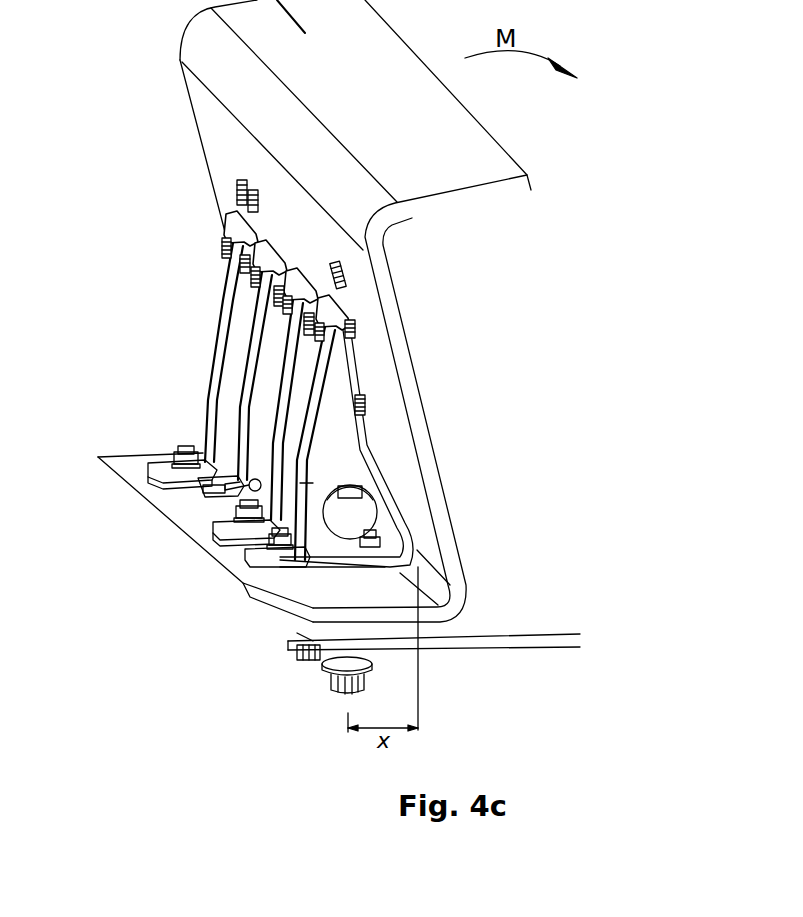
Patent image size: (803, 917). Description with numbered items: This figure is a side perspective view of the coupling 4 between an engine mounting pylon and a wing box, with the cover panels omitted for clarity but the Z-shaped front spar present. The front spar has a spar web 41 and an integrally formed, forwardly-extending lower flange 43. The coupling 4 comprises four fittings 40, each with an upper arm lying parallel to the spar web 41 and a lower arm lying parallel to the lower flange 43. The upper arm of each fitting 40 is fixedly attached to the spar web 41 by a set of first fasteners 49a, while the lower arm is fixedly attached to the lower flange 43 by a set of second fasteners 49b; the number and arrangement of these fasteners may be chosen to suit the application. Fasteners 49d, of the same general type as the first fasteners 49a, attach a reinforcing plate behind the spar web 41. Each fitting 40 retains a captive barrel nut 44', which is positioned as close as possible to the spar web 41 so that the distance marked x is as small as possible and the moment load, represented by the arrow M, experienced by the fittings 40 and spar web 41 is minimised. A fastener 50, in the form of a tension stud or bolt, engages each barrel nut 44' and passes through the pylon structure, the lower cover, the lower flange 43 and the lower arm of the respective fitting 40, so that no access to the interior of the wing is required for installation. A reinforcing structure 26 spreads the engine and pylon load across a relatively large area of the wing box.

The coupling 4 is at (645, 366).
The reinforcing structure 26 is at (502, 645).
The fitting 40 is at (291, 440).
The spar web 41 is at (415, 398).
The lower flange 43 is at (300, 583).
The barrel nut 44' is at (423, 516).
The first fastener 49a is at (226, 243).
The second fastener 49b is at (177, 452).
The fastener 49d is at (235, 183).
The fastener 50 is at (332, 675).